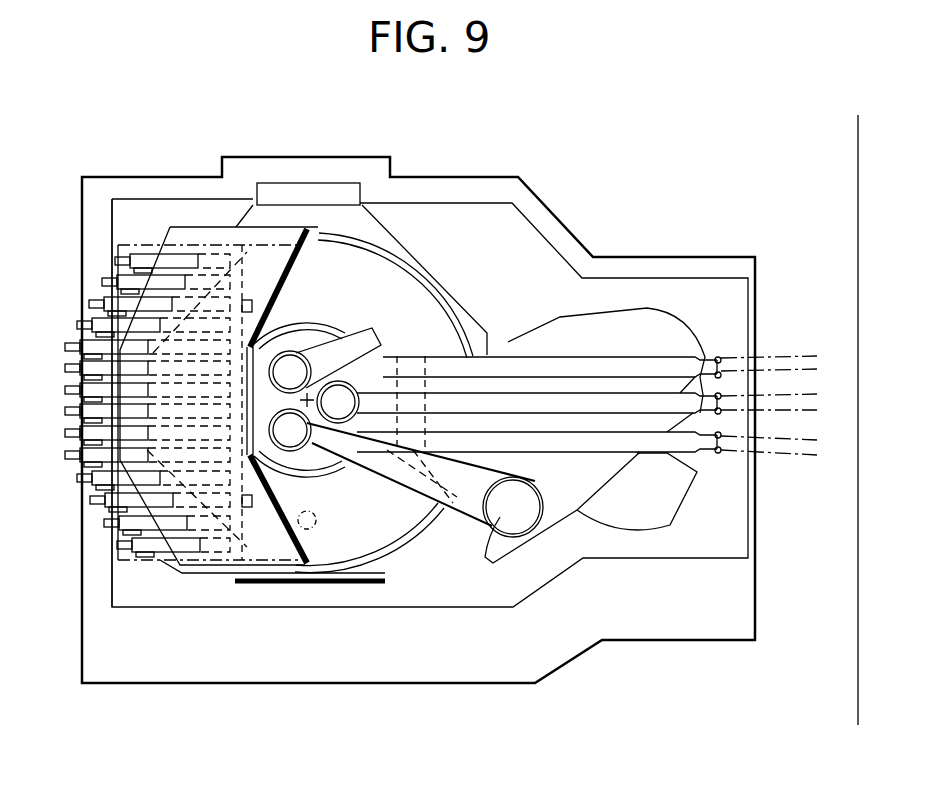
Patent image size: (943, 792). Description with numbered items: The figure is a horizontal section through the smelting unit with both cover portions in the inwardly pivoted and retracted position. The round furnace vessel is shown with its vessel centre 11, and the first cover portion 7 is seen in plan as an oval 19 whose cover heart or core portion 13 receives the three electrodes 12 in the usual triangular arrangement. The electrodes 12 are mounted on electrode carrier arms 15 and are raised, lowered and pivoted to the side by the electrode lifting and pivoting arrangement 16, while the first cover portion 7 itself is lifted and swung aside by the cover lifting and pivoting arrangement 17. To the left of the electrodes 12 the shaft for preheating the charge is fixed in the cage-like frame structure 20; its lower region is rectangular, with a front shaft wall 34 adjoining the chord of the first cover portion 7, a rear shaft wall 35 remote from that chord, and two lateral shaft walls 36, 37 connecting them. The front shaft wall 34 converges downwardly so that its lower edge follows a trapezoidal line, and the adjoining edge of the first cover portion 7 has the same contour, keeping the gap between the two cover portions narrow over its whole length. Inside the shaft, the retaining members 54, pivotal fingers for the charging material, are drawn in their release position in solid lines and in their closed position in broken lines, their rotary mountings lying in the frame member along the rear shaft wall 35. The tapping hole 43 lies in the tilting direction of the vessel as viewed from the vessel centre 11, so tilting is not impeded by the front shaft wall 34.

The first cover portion 7 is at (393, 553).
The vessel centre 11 is at (331, 383).
The electrodes 12 is at (292, 370).
The cover heart or core portion 13 is at (323, 463).
The electrode carrier arms 15 is at (613, 440).
The electrode lifting and pivoting arrangement 16 is at (632, 340).
The cover lifting and pivoting arrangement 17 is at (500, 517).
The oval 19 is at (447, 305).
The frame structure 20 is at (180, 570).
The front shaft wall 34 is at (287, 247).
The rear shaft wall 35 is at (117, 373).
The lateral shaft wall 36 is at (218, 567).
The lateral shaft wall 37 is at (205, 245).
The tapping hole 43 is at (327, 547).
The retaining members 54 is at (157, 485).